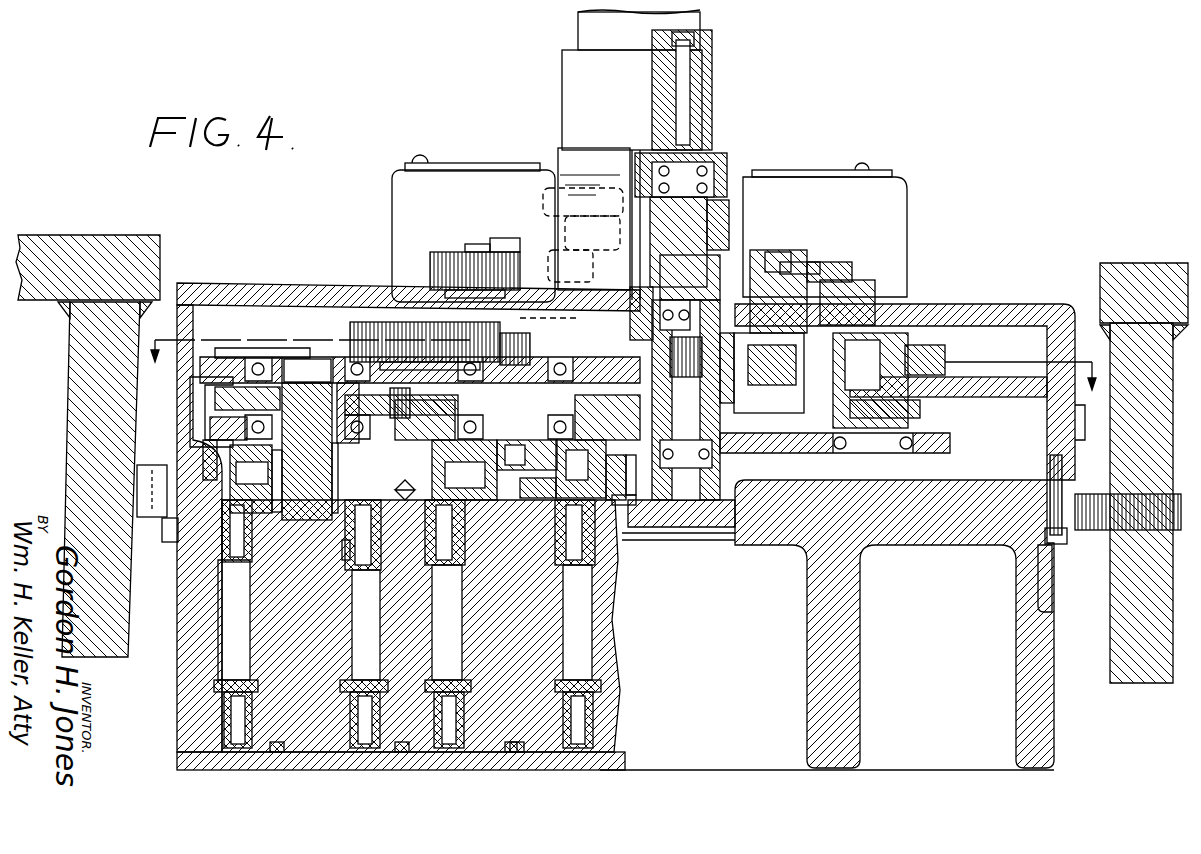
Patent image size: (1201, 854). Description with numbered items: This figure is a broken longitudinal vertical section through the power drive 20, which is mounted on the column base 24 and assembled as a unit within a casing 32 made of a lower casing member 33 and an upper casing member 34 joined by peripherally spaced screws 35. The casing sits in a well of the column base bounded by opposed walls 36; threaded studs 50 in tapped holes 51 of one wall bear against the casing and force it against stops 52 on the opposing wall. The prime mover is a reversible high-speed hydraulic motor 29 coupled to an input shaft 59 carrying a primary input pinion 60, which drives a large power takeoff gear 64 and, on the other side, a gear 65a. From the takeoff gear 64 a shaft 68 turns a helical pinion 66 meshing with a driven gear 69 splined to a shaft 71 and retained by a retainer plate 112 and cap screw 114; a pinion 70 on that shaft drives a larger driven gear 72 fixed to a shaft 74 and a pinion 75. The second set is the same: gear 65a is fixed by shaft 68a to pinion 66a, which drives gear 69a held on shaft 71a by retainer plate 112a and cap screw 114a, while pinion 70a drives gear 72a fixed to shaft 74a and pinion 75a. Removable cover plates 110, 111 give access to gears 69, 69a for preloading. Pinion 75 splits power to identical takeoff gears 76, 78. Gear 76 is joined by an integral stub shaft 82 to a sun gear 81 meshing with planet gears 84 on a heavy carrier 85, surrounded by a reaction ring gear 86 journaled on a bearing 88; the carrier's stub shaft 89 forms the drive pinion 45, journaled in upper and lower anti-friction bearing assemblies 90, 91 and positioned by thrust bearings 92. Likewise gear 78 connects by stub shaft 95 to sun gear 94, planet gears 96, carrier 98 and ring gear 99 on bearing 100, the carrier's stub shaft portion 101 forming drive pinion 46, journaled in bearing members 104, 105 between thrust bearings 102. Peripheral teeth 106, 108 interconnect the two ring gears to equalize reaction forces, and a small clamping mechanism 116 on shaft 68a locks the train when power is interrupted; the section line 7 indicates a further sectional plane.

The section line 7- 7 is at (623, 350).
The power drive 20 is at (408, 506).
The column base 24 is at (90, 234).
The hydraulic motor 29 is at (712, 22).
The casing 32 is at (1068, 294).
The lower casing member 33 is at (215, 770).
The upper casing member 34 is at (280, 283).
The screws 35 is at (1055, 555).
The walls 36 is at (130, 638).
The drive pinion 45 is at (250, 665).
The drive pinion 46 is at (565, 665).
The threaded studs 50 is at (1106, 480).
The tapped holes 51 is at (1066, 545).
The stops 52 is at (148, 487).
The input shaft 59 is at (655, 98).
The primary input pinion 60 is at (638, 200).
The power takeoff gear 64 is at (543, 200).
The gear 65a is at (760, 250).
The pinion 66 is at (593, 262).
The pinion 66a is at (728, 255).
The shaft 68 is at (565, 222).
The shaft 68a is at (730, 228).
The driven gear 69 is at (430, 265).
The gear 69a is at (858, 275).
The pinion 70 is at (530, 348).
The pinion 70a is at (760, 400).
The shaft 71 is at (560, 322).
The shaft 71a is at (850, 268).
The driven gear 72 is at (350, 330).
The gear 72a is at (940, 352).
The shaft 74 is at (401, 405).
The shaft 74a is at (835, 420).
The pinion 75 is at (435, 405).
The pinion 75a is at (905, 418).
The takeoff gear 76 is at (205, 392).
The takeoff gear 78 is at (615, 398).
The sun gear 81 is at (285, 490).
The stub shaft 82 is at (320, 439).
The planet gears 84 is at (340, 495).
The carrier 85 is at (251, 479).
The ring gear 86 is at (215, 398).
The bearing 88 is at (208, 458).
The stub shaft 89 is at (235, 745).
The upper anti-friction bearing assembly 90 is at (380, 560).
The lower anti-friction bearing assembly 91 is at (372, 745).
The thrust bearings 92 is at (305, 720).
The sun gear 94 is at (500, 458).
The stub shaft 95 is at (420, 370).
The planet gears 96 is at (565, 500).
The carrier 98 is at (464, 470).
The ring gear 99 is at (410, 505).
The bearing 100 is at (630, 495).
The stub shaft portion 101 is at (510, 735).
The thrust bearings 102 is at (525, 752).
The anti-friction bearing member 104 is at (640, 505).
The anti-friction bearing member 105 is at (575, 745).
The teeth 106 is at (212, 428).
The teeth 108 is at (618, 500).
The cover plate 110 is at (500, 150).
The cover plate 111 is at (820, 160).
The retainer plate 112 is at (475, 244).
The retainer plate 112a is at (820, 268).
The cap screw 114 is at (500, 238).
The cap screw 114a is at (780, 252).
The clamping mechanism 116 is at (644, 356).